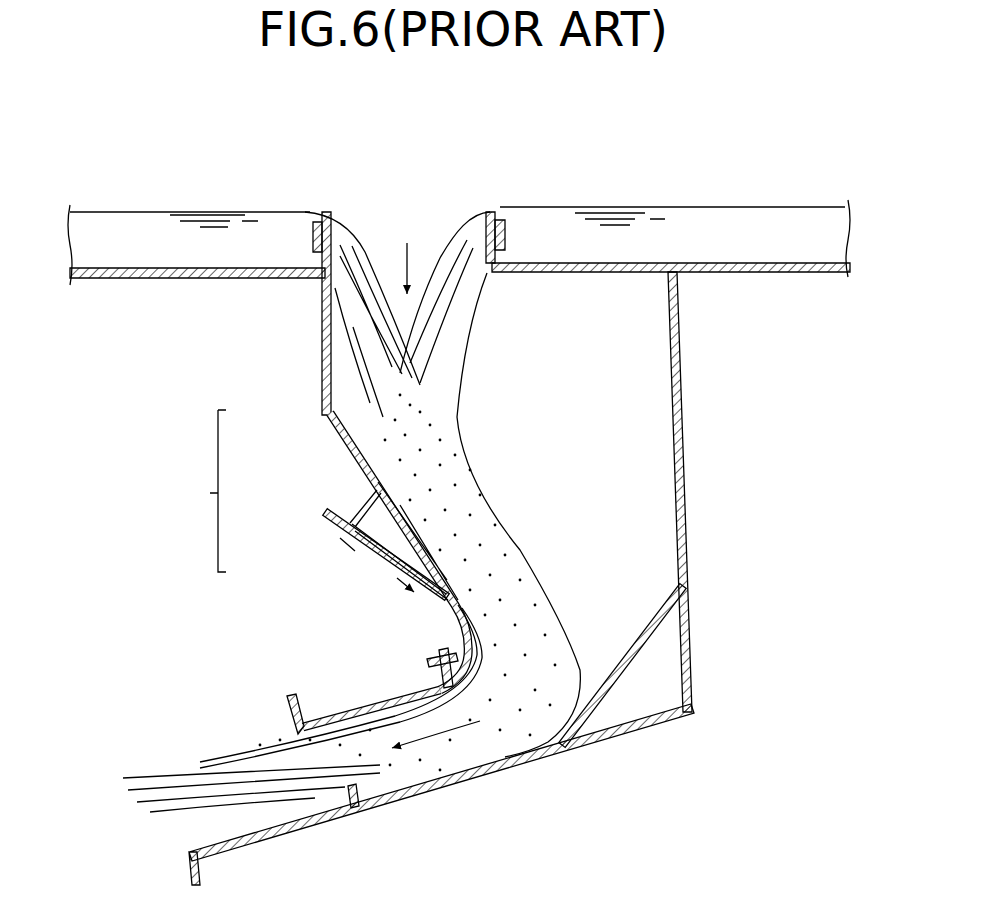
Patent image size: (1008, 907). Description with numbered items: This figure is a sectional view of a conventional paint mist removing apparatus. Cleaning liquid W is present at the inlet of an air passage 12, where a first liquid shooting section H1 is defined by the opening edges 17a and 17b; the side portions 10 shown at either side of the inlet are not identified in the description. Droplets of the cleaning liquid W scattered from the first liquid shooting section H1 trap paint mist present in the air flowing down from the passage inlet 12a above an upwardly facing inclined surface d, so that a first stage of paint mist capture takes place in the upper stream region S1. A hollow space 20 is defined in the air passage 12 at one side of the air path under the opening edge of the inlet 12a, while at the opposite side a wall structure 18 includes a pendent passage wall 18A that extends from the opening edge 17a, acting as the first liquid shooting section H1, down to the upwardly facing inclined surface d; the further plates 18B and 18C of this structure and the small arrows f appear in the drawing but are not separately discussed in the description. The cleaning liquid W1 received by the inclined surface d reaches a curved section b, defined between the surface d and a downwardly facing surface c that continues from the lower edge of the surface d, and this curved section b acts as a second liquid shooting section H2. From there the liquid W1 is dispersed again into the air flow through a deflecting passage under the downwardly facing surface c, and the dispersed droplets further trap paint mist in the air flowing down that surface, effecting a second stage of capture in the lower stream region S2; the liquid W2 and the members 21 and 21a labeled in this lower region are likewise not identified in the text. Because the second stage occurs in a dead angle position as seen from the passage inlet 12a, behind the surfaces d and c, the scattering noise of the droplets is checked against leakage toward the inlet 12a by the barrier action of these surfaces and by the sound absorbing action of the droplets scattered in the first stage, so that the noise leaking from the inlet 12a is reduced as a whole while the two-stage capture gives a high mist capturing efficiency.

The trough / bath bottom plate 10 is at (182, 258).
The cleaning liquid W is at (118, 215).
The first liquid shooting section H1 is at (319, 200).
The opening edge 17a is at (313, 228).
The opening edge 17b is at (500, 233).
The passage inlet 12a is at (390, 270).
The air passage 12 is at (540, 493).
The hollow space 20 is at (620, 353).
The upper stream section S1 is at (408, 397).
The upwardly facing inclined surface d is at (373, 480).
The cleaning liquid received by the inclined surface W1 is at (447, 578).
The curved section b is at (477, 642).
The flow guide assembly 18 is at (202, 491).
The pendent passage wall 18A is at (327, 397).
The inclined guide plate 18B is at (360, 465).
The auxiliary guide plate 18C is at (413, 710).
The flow direction f is at (377, 570).
The downwardly facing surface c is at (350, 730).
The second liquid shooting section H2 is at (484, 677).
The stopper plate 21 is at (366, 793).
The stopper plate foot 21a is at (352, 788).
The liquid stream W2 is at (470, 760).
The lower stream section S2 is at (410, 757).